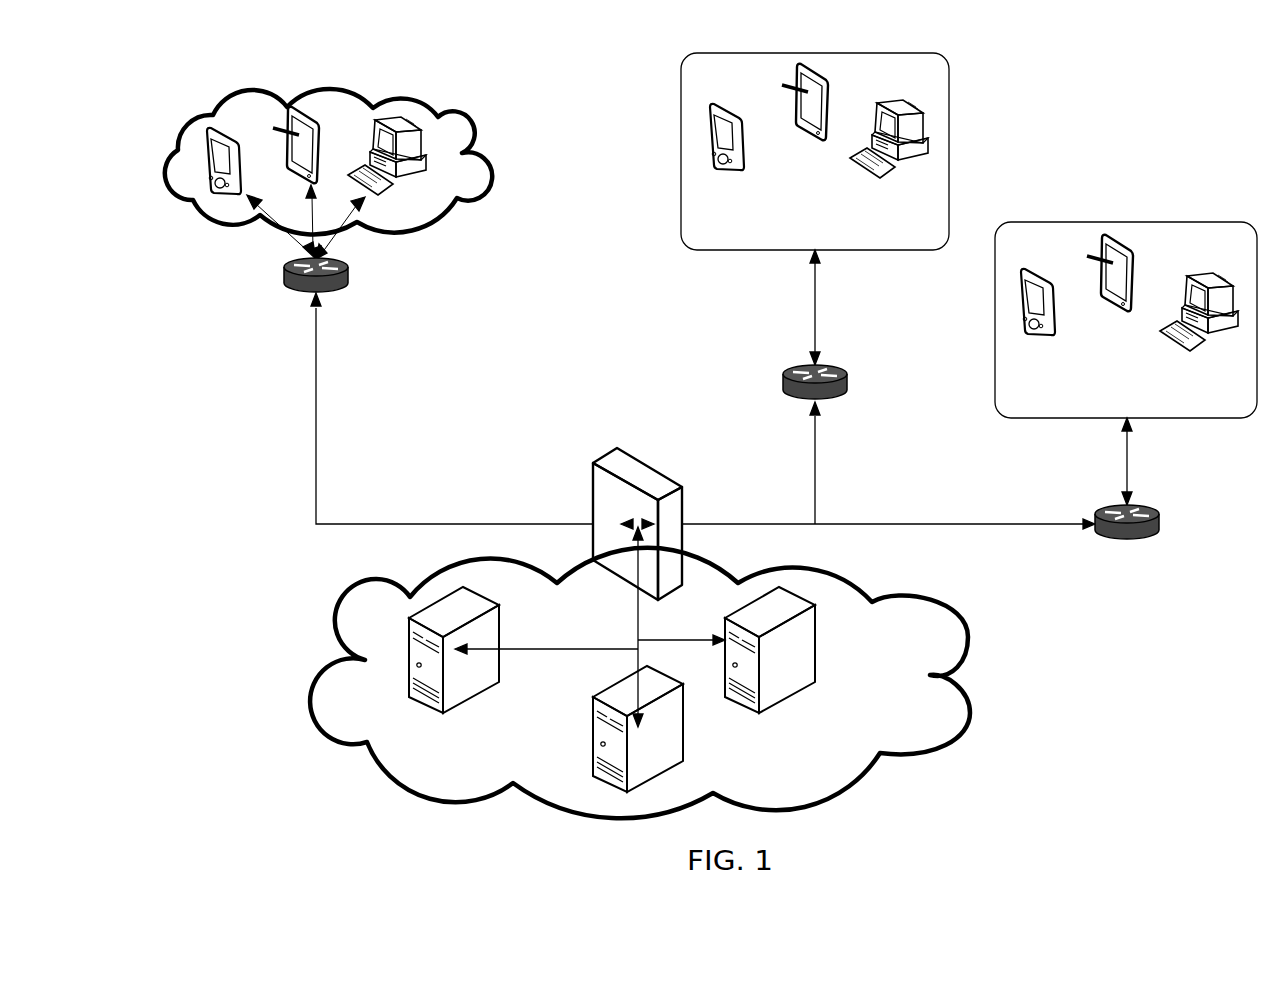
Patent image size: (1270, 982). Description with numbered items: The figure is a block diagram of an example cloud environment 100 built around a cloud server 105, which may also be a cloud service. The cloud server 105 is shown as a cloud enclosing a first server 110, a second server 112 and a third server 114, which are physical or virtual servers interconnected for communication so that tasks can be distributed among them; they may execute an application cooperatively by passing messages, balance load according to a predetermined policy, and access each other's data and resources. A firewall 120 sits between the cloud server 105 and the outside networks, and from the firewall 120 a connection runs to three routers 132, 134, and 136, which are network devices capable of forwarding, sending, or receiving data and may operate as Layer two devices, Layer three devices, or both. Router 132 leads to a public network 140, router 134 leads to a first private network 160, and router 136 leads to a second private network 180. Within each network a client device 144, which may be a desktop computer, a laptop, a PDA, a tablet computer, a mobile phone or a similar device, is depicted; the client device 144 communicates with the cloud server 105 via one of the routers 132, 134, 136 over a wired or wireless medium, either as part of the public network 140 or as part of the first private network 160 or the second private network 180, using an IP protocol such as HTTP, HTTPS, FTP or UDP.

The cloud environment 100 is at (236, 568).
The cloud server 105 is at (967, 630).
The first server 110 is at (500, 683).
The second server 112 is at (683, 767).
The third server 114 is at (815, 685).
The firewall 120 is at (593, 463).
The router 132 is at (353, 275).
The router 134 is at (783, 397).
The router 136 is at (1162, 525).
The public network 140 is at (479, 188).
The client device 144 is at (1157, 378).
The first private network 160 is at (950, 118).
The second private network 180 is at (1090, 215).